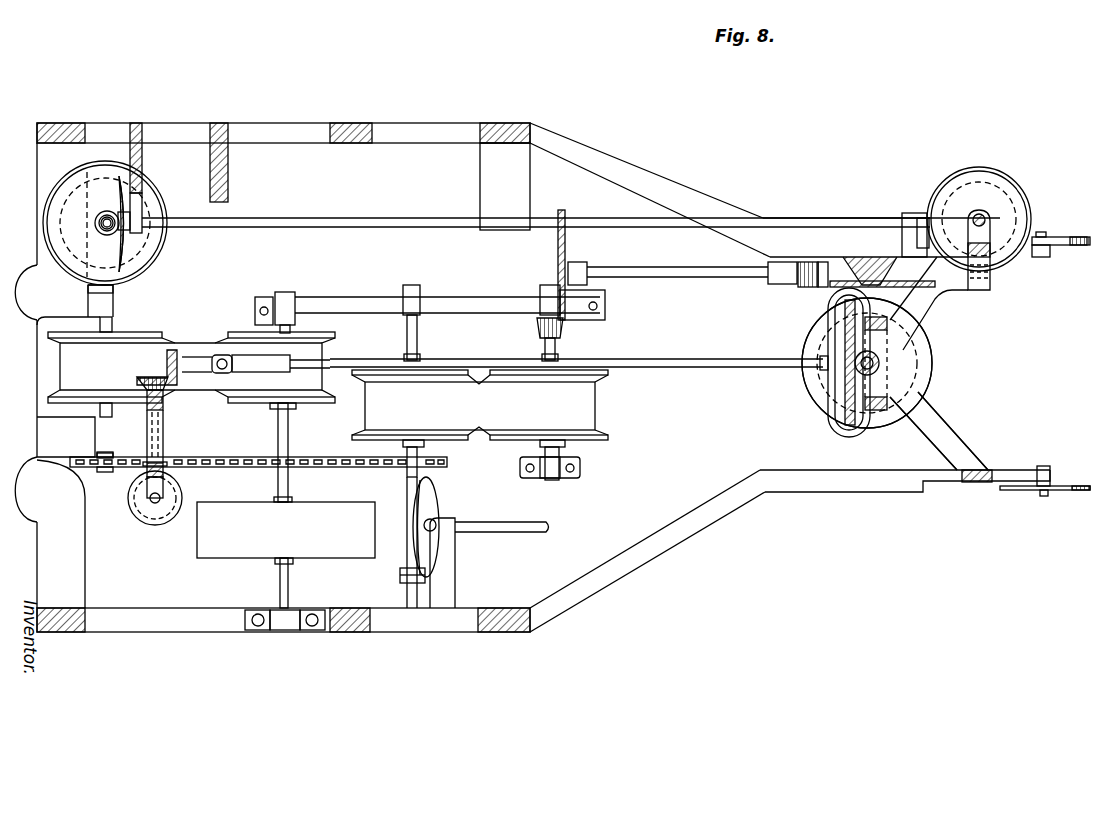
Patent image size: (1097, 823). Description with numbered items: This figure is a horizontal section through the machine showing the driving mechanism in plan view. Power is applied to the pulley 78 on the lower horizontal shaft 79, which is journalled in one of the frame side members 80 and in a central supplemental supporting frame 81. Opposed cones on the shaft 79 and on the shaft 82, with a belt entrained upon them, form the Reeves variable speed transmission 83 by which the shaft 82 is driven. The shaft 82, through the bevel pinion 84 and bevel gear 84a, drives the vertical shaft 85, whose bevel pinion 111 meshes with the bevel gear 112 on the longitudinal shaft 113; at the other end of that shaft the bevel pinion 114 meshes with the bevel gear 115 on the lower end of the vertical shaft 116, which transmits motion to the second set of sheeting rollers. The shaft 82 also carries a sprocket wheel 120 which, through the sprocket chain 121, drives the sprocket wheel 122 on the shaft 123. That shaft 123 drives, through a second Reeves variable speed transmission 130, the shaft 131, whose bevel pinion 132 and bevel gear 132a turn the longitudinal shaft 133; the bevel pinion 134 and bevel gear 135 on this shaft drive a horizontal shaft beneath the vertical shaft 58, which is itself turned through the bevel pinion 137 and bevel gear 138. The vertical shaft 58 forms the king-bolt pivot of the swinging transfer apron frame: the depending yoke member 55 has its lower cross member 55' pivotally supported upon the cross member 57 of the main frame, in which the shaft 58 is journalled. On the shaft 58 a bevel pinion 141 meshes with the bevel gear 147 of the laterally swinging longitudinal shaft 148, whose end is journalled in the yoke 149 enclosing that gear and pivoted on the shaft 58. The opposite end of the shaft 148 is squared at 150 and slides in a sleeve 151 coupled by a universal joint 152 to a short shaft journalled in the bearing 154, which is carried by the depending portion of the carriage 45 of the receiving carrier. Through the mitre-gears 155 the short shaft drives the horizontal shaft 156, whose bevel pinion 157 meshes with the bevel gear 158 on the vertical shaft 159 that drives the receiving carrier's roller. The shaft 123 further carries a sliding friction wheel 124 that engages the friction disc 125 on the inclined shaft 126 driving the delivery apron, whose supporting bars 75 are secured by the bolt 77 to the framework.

The carriage 45 is at (148, 410).
The depending yoke member 55 is at (882, 390).
The lower cross member 55' is at (918, 330).
The cross member 57 is at (926, 414).
The vertical shaft 58 is at (880, 360).
The bars 75 is at (1076, 238).
The bolt 77 is at (1042, 233).
The pulley 78 is at (220, 552).
The lower horizontal shaft 79 is at (289, 583).
The frame side member 80 is at (222, 630).
The central supplemental supporting frame 81 is at (360, 298).
The shaft 82 is at (113, 326).
The Reeves variable speed transmission 83 is at (195, 344).
The bevel pinion 84 is at (120, 292).
The bevel gear 84a is at (138, 280).
The vertical shaft 85 is at (96, 223).
The bevel pinion 111 is at (109, 206).
The bevel gear 112 is at (121, 250).
The longitudinal shaft 113 is at (326, 216).
The bevel pinion 114 is at (921, 212).
The bevel gear 115 is at (966, 177).
The vertical shaft 116 is at (983, 215).
The sprocket wheel 120 is at (116, 472).
The sprocket chain 121 is at (326, 469).
The sprocket wheel 122 is at (407, 475).
The shaft 123 is at (410, 492).
The sliding friction wheel 124 is at (400, 576).
The friction disc 125 is at (432, 496).
The inclined shaft 126 is at (512, 526).
The second Reeves variable speed transmission 130 is at (485, 427).
The shaft 131 is at (562, 351).
The bevel pinion 132 is at (541, 310).
The bevel gear 132a is at (559, 257).
The longitudinal shaft 133 is at (690, 279).
The bevel pinion 134 is at (818, 263).
The bevel gear 135 is at (818, 289).
The bevel pinion 137 is at (920, 313).
The bevel gear 138 is at (814, 340).
The bevel pinion 141 is at (880, 366).
The bevel gear 147 is at (826, 399).
The laterally swinging longitudinal shaft 148 is at (692, 368).
The yoke 149 is at (836, 432).
The squared end 150 is at (305, 357).
The sleeve 151 is at (270, 368).
The universal joint 152 is at (212, 373).
The bearing 154 is at (166, 351).
The mitre-gears 155 is at (150, 379).
The horizontal shaft 156 is at (164, 437).
The bevel pinion 157 is at (168, 480).
The bevel gear 158 is at (161, 518).
The vertical shaft 159 is at (151, 502).